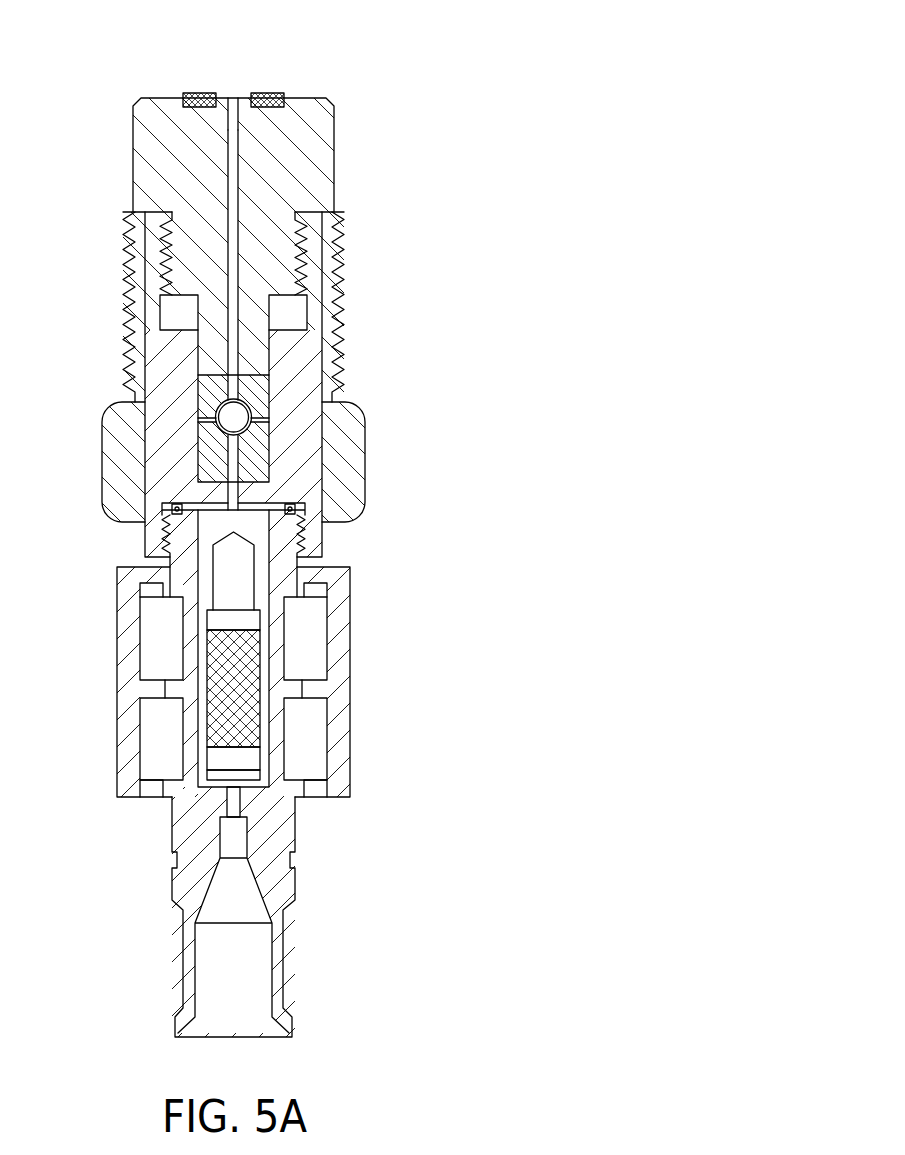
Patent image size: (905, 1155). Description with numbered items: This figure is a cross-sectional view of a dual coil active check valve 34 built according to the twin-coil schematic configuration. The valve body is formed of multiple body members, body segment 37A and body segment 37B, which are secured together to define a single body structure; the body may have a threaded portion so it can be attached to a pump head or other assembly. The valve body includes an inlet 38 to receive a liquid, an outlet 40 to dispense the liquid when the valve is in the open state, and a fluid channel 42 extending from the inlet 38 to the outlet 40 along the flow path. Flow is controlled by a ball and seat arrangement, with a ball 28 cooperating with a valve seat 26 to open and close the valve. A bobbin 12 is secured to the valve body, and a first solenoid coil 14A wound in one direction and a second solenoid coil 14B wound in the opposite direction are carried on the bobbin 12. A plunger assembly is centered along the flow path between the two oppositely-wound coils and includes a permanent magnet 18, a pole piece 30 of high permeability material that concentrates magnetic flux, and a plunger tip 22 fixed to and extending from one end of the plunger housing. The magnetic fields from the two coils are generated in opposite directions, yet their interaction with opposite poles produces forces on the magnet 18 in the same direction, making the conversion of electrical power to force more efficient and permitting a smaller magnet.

The dual coil active check valve 34 is at (493, 113).
The outlet 40 is at (237, 107).
The fluid channel 42 is at (237, 212).
The body segment 37A is at (158, 357).
The plunger tip 22 is at (235, 452).
The ball 28 is at (243, 416).
The valve seat 26 is at (250, 465).
The bobbin 12 is at (165, 690).
The second solenoid coil 14B is at (148, 660).
The first solenoid coil 14A is at (150, 737).
The permanent magnet 18 is at (245, 687).
The pole piece 30 is at (238, 744).
The body segment 37B is at (172, 805).
The inlet 38 is at (223, 812).